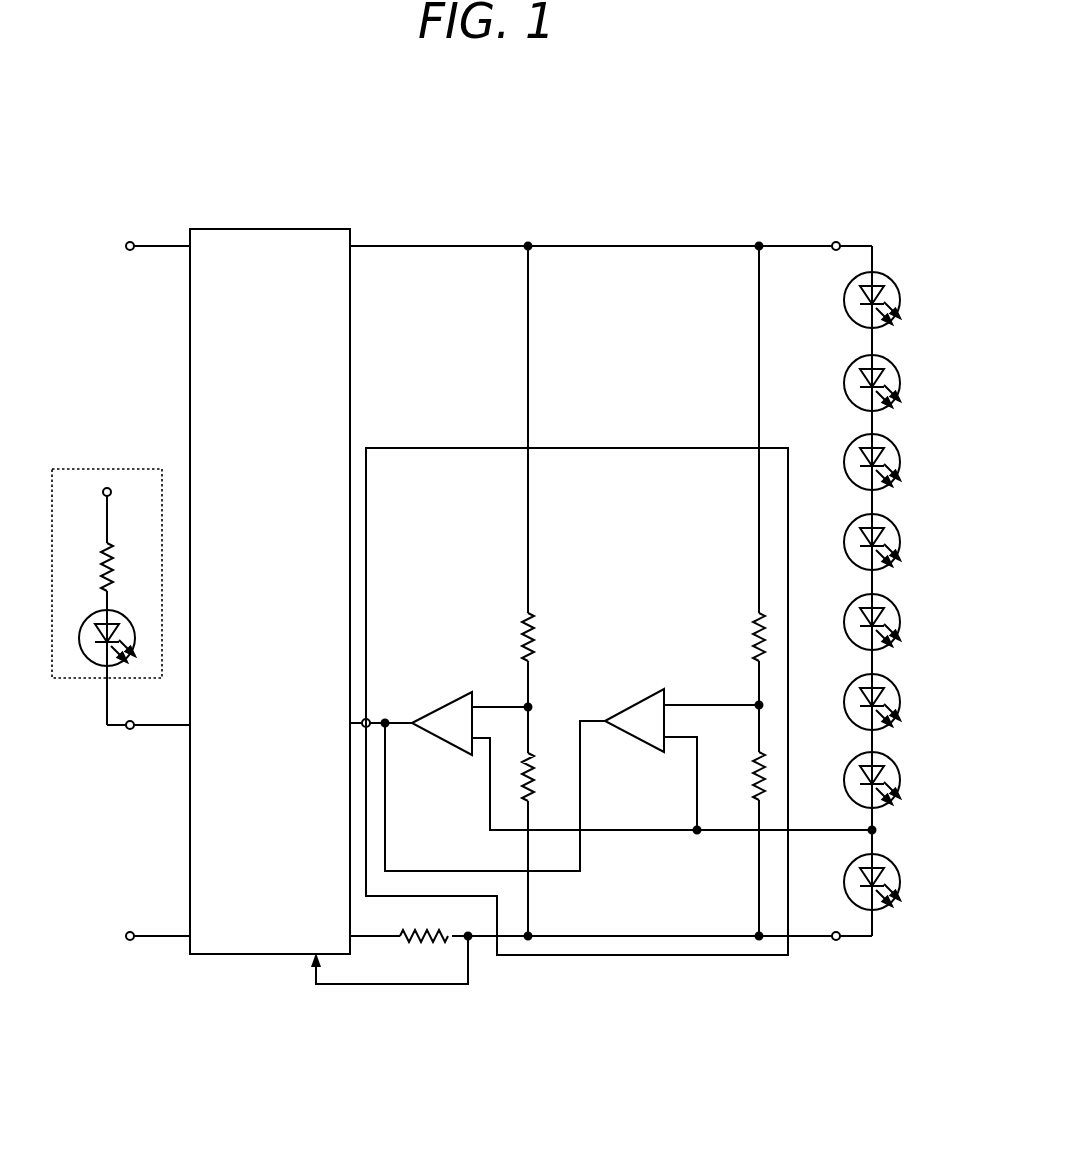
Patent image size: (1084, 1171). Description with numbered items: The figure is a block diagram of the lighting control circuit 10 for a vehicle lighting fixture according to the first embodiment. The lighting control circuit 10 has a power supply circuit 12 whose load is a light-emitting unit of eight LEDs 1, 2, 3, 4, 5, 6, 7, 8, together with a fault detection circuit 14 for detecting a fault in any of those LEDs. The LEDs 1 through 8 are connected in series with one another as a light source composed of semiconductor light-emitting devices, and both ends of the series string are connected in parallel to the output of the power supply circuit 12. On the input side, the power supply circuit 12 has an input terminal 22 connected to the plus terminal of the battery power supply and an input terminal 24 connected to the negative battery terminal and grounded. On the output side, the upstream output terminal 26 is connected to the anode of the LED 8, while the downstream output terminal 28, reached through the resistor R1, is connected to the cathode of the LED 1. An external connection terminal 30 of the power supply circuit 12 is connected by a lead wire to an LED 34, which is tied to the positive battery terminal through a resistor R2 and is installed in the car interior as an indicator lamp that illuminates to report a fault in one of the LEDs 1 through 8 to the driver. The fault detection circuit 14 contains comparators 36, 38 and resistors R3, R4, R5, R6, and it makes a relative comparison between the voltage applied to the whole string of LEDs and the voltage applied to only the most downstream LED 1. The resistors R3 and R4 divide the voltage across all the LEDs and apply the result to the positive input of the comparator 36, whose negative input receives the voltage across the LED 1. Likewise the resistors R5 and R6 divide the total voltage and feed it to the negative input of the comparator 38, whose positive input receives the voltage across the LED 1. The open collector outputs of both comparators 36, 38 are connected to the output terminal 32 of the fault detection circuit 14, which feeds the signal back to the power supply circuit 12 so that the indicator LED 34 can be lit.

The LED 1 is at (897, 874).
The LED 2 is at (897, 772).
The LED 3 is at (897, 694).
The LED 4 is at (897, 614).
The LED 5 is at (897, 534).
The LED 6 is at (897, 454).
The LED 7 is at (897, 375).
The LED 8 is at (897, 292).
The lighting control circuit 10 is at (536, 196).
The power supply circuit 12 is at (217, 228).
The fault detection circuit 14 is at (572, 447).
The input terminal 22 is at (130, 242).
The input terminal 24 is at (130, 945).
The output terminal 26 is at (839, 242).
The output terminal 28 is at (838, 940).
The external connection terminal 30 is at (130, 729).
The output terminal 32 is at (368, 718).
The LED 34 is at (95, 663).
The comparator 36 is at (628, 700).
The comparator 38 is at (458, 692).
The resistor R1 is at (391, 940).
The resistor R2 is at (128, 549).
The resistor R3 is at (739, 476).
The resistor R4 is at (739, 800).
The resistor R5 is at (548, 477).
The resistor R6 is at (548, 800).